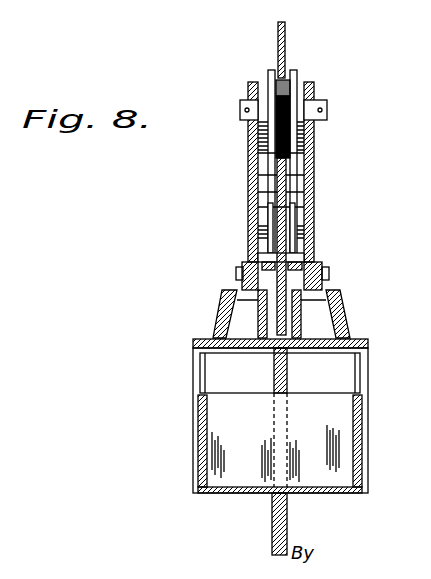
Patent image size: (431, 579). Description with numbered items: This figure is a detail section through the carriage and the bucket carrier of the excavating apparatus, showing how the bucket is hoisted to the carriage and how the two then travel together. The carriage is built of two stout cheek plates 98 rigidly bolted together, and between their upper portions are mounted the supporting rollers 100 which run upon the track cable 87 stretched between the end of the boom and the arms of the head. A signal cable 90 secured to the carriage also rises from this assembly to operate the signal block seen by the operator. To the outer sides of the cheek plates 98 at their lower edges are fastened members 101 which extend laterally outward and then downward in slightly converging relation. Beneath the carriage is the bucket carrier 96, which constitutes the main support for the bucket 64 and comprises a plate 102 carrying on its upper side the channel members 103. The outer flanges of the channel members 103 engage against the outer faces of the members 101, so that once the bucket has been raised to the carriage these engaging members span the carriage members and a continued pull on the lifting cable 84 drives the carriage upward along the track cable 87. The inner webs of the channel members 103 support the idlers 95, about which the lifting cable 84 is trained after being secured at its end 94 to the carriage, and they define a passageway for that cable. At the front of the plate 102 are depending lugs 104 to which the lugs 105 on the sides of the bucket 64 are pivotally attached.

The cable 90 is at (285, 45).
The supporting rollers 100 is at (296, 77).
The cheek plates 98 is at (250, 171).
The end of elevating cable 94 is at (299, 254).
The members 101 is at (235, 292).
The channel members 103 is at (226, 298).
The bucket carrier 96 is at (262, 301).
The idlers 95 is at (272, 306).
The plate 102 is at (362, 342).
The depending lugs 104 is at (195, 366).
The lugs 105 is at (200, 386).
The lifting cable 84 is at (289, 341).
The bucket 64 is at (275, 453).
The track cable 87 is at (276, 520).